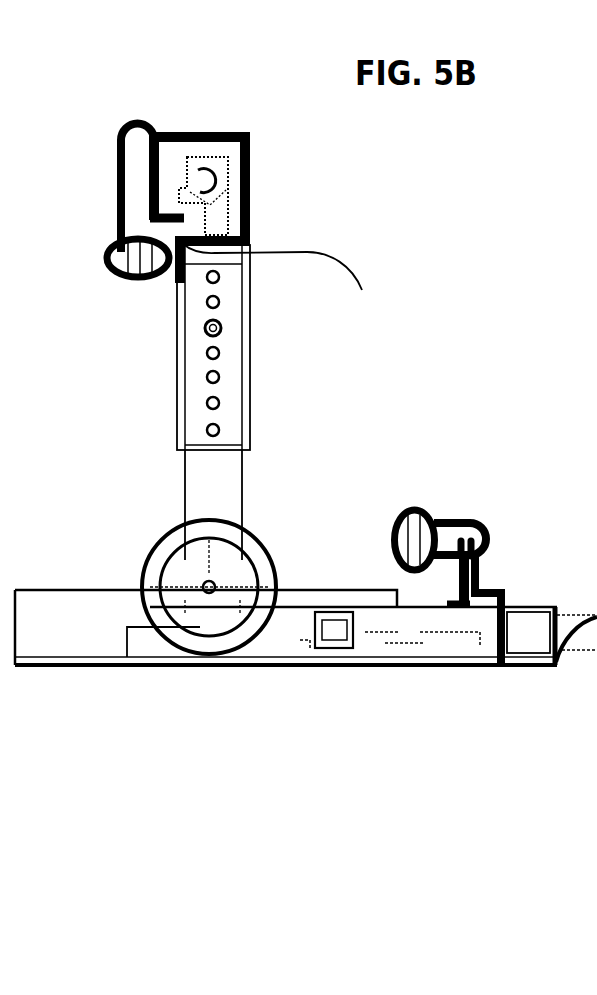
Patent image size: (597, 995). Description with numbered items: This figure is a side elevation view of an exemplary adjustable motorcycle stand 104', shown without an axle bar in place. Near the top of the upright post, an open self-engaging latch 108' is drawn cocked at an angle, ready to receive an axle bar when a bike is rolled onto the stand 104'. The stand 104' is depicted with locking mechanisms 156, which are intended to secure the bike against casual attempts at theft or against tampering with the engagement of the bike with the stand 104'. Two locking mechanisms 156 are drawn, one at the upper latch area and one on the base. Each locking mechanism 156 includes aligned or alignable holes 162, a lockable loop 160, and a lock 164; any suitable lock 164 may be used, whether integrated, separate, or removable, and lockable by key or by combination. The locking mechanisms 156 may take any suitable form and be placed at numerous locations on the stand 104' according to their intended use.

The adjustable motorcycle stand 104' is at (306, 530).
The open self-engaging latch 108' is at (226, 138).
The locking mechanism 156 is at (507, 582).
The lockable loop 160 is at (455, 580).
The aligned or alignable hole 162 is at (157, 133).
The lock 164 is at (125, 280).